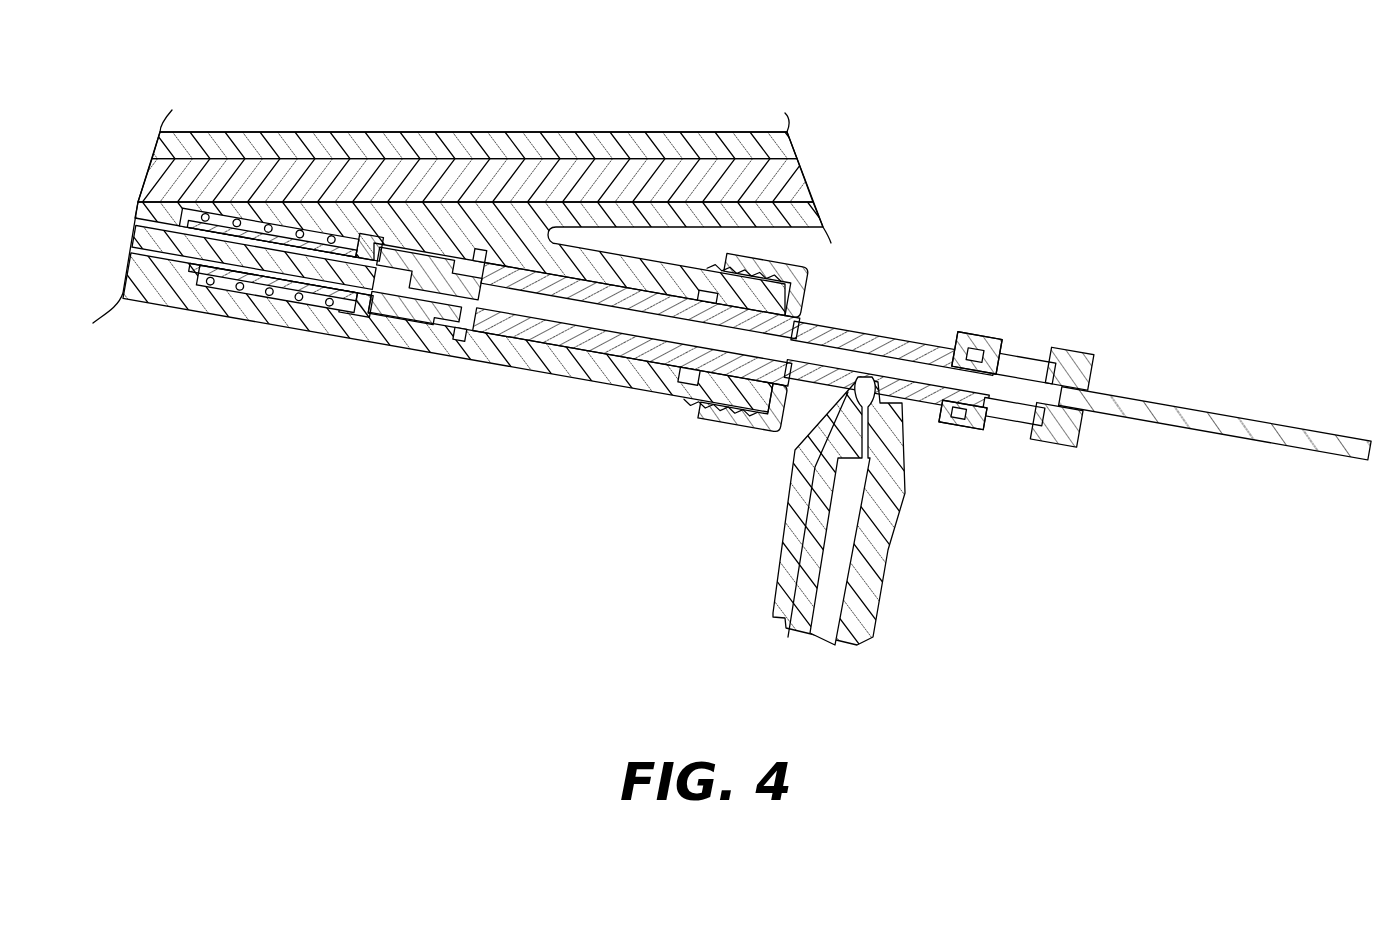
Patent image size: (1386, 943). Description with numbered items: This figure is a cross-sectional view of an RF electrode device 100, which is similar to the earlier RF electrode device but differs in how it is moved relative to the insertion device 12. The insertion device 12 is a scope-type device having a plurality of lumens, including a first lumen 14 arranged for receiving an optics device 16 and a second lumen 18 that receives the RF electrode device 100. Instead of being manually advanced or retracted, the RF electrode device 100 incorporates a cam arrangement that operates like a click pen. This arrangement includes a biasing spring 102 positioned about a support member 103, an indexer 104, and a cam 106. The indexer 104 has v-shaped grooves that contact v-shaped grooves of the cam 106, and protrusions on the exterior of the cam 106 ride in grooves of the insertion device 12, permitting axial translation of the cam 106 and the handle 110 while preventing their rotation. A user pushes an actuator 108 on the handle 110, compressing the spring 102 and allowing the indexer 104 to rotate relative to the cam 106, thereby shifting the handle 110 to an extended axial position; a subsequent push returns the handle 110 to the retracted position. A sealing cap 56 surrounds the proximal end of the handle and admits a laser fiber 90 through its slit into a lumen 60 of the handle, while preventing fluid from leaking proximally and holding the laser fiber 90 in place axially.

The insertion device 12 is at (640, 130).
The first lumen 14 is at (453, 152).
The optics device 16 is at (532, 175).
The second lumen 18 is at (150, 280).
The RF electrode device 100 is at (933, 211).
The biasing spring 102 is at (208, 298).
The support member 103 is at (305, 312).
The indexer 104 is at (382, 318).
The cam 106 is at (565, 345).
The actuator 108 is at (893, 550).
The handle 110 is at (820, 332).
The lumen 60 is at (930, 342).
The sealing cap 56 is at (1028, 347).
The laser fiber 90 is at (1327, 432).